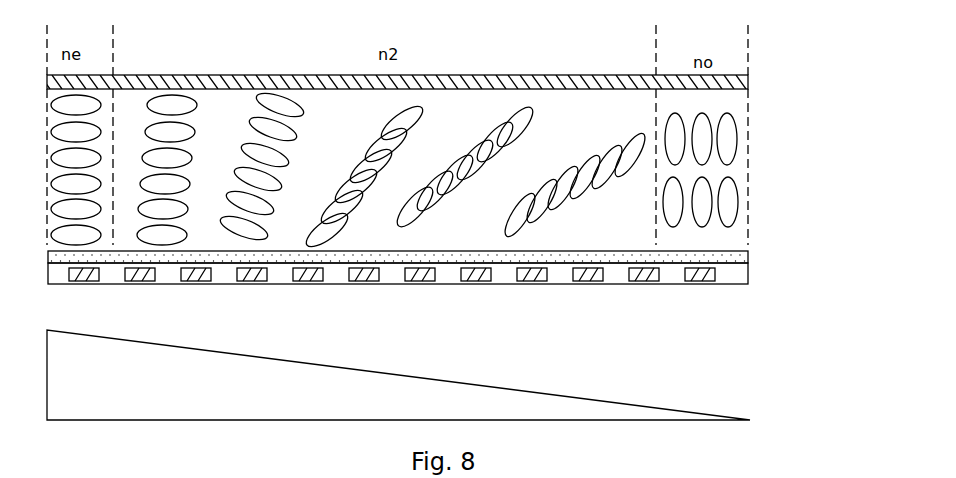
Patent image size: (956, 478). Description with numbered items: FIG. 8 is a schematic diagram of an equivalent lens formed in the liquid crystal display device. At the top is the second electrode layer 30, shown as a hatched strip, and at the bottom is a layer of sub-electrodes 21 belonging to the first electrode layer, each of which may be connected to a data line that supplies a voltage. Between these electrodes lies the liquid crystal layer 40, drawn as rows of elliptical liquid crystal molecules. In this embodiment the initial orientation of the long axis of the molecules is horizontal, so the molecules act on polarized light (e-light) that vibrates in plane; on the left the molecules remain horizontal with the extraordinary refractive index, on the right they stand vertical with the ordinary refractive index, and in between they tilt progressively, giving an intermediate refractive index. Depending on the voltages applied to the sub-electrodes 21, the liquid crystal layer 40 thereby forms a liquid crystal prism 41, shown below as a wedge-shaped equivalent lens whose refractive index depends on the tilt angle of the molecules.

The second electrode layer 30 is at (738, 82).
The liquid crystal layer 40 is at (727, 233).
The sub-electrode 21 is at (708, 275).
The liquid crystal prism 41 is at (343, 377).